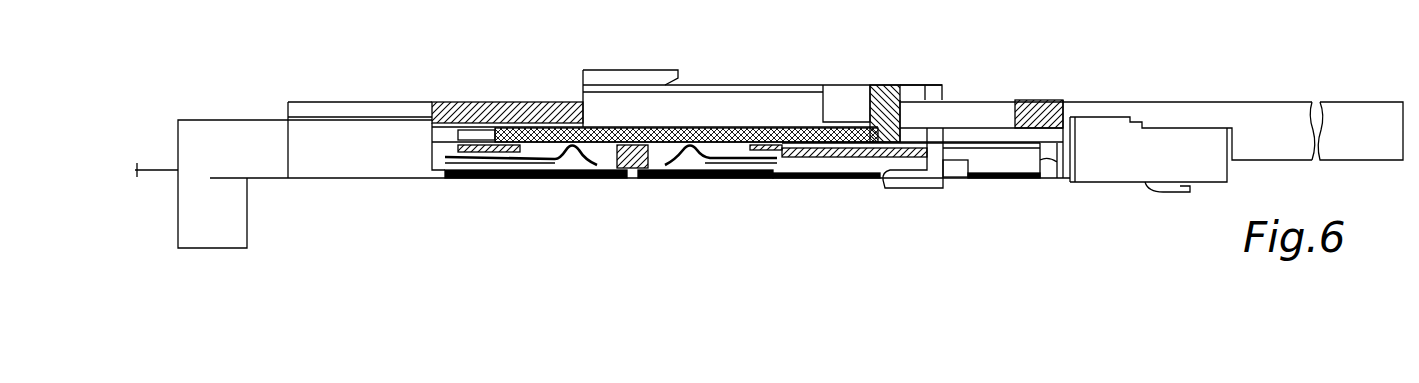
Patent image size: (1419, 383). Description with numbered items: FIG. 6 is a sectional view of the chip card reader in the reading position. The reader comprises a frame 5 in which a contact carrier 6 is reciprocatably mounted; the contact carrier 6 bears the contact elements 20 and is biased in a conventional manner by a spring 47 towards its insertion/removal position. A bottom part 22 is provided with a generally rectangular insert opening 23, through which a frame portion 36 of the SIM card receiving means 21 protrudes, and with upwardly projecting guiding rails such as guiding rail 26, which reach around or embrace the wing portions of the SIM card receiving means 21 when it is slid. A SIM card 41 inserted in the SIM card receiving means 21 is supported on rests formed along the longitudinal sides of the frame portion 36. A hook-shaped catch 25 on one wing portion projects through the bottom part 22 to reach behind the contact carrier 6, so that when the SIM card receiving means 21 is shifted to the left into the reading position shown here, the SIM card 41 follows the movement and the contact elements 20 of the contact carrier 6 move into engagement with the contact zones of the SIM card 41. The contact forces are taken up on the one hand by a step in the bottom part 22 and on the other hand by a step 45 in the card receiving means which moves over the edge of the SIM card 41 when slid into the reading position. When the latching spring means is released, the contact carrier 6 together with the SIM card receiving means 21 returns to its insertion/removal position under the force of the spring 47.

The frame 5 is at (368, 157).
The contact carrier 6 is at (690, 162).
The contact elements 20 is at (547, 178).
The SIM card receiving means 21 is at (810, 82).
The bottom part 22 is at (1180, 113).
The insert opening 23 is at (1011, 110).
The catch 25 is at (911, 178).
The guiding rail 26 is at (620, 82).
The frame portion 36 is at (853, 112).
The SIM card 41 is at (715, 130).
The step 45 is at (863, 155).
The spring 47 is at (1175, 190).